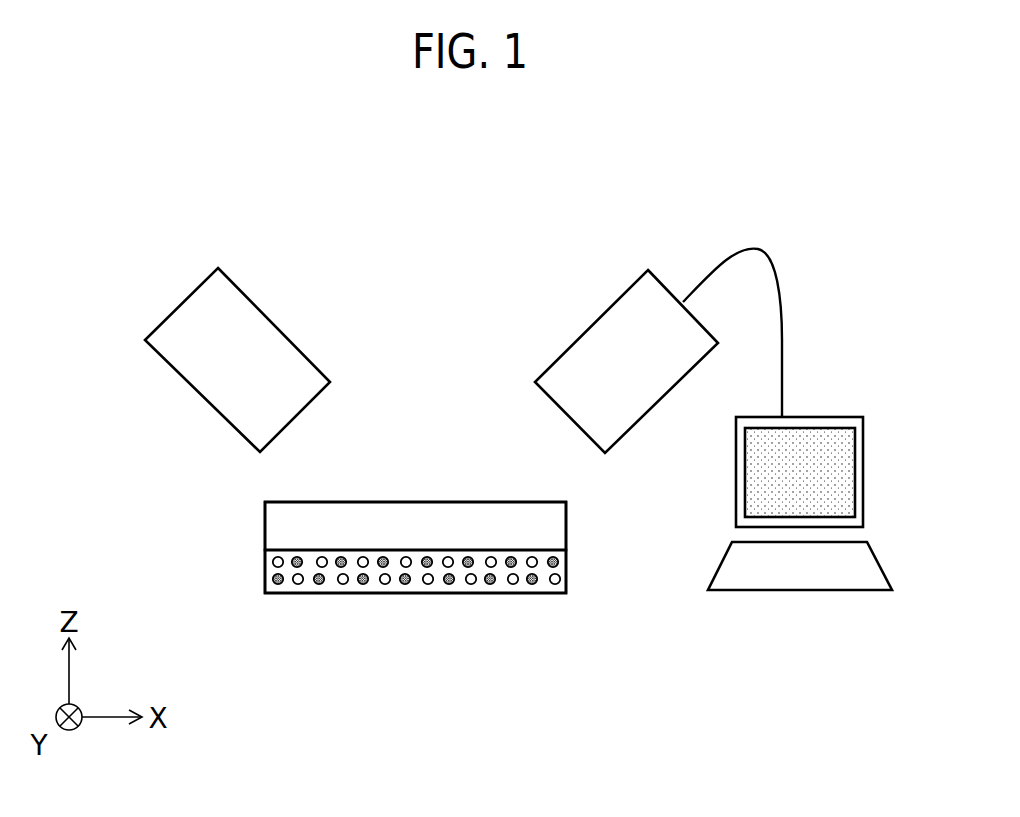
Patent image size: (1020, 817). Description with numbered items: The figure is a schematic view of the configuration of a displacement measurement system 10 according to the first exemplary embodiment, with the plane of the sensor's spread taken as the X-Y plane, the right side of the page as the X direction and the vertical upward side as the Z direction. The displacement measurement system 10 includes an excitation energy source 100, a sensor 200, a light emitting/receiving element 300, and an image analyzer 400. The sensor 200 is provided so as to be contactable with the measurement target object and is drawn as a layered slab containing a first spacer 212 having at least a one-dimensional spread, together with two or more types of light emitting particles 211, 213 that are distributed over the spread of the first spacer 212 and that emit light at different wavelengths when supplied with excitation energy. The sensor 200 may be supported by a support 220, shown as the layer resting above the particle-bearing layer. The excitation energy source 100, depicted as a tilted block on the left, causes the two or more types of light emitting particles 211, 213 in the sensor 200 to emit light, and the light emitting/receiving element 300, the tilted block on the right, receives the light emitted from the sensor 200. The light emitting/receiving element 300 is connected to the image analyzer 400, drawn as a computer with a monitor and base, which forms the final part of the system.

The displacement measurement system 10 is at (449, 216).
The excitation energy source 100 is at (289, 337).
The sensor 200 is at (436, 584).
The light emitting particles 211 is at (532, 585).
The first spacer 212 is at (308, 585).
The light emitting particles 213 is at (428, 585).
The support 220 is at (566, 527).
The light emitting/receiving element 300 is at (580, 338).
The image analyzer 400 is at (817, 415).